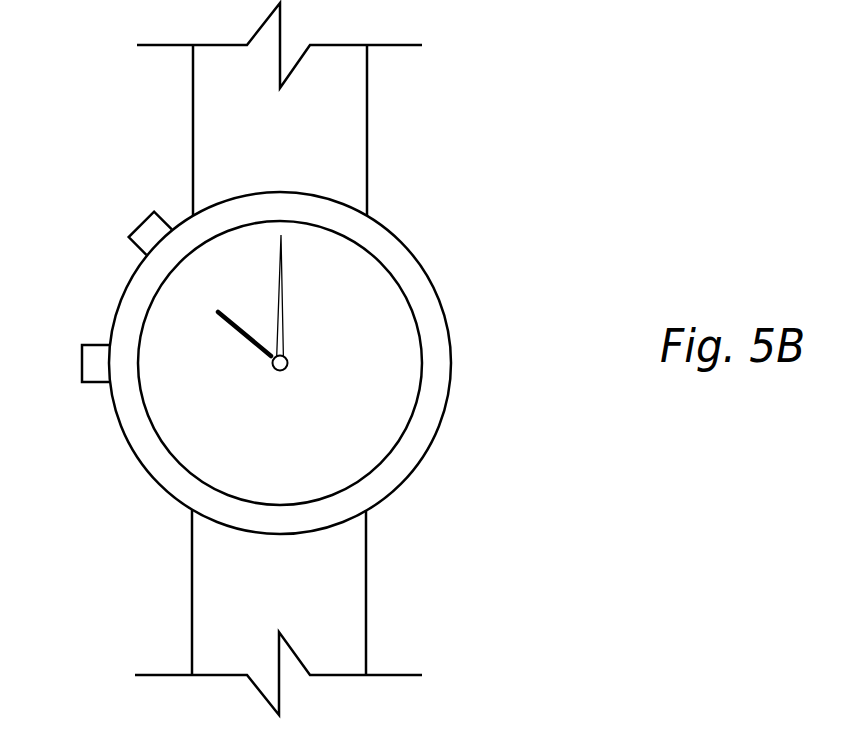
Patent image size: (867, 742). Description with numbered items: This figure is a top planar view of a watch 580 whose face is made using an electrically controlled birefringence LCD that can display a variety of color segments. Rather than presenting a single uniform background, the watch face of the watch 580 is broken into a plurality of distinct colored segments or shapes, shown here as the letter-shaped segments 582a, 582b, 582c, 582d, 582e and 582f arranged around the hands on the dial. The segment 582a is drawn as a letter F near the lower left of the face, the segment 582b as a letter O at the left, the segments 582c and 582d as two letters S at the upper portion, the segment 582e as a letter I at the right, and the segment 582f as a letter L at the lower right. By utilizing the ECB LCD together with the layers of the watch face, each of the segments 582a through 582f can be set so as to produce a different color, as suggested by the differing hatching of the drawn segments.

The watch 580 is at (556, 172).
The colored segment 582a is at (151, 455).
The colored segment 582b is at (129, 348).
The colored segment 582c is at (167, 242).
The colored segment 582d is at (382, 258).
The colored segment 582e is at (377, 356).
The colored segment 582f is at (323, 435).